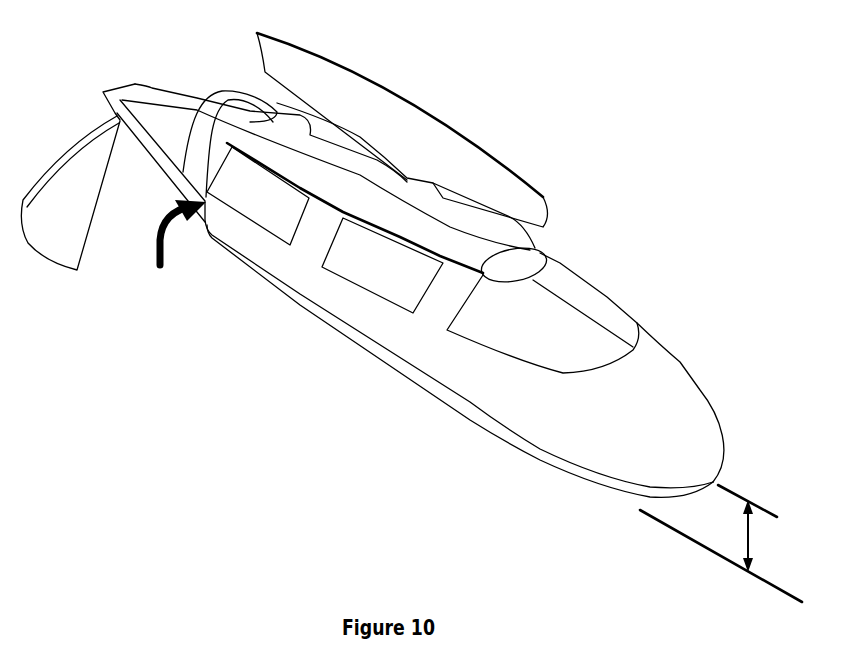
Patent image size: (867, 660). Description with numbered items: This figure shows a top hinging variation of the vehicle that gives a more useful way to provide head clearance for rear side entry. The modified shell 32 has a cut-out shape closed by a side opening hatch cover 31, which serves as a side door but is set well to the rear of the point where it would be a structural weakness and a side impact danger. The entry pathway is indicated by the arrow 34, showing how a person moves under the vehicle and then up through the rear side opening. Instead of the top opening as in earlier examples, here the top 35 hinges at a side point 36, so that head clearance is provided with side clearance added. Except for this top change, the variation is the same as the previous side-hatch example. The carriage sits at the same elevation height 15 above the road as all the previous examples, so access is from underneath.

The elevation height 15 is at (749, 543).
The side opening hatch cover 31 is at (48, 235).
The modified shell 32 is at (368, 317).
The entry pathway arrow 34 is at (167, 248).
The top 35 is at (483, 147).
The side point 36 is at (410, 181).